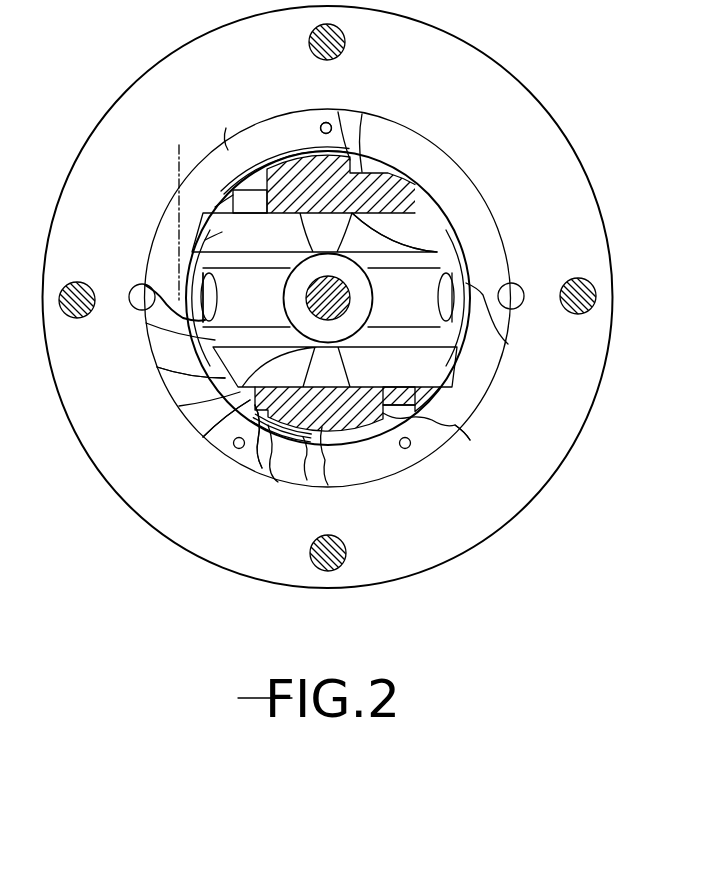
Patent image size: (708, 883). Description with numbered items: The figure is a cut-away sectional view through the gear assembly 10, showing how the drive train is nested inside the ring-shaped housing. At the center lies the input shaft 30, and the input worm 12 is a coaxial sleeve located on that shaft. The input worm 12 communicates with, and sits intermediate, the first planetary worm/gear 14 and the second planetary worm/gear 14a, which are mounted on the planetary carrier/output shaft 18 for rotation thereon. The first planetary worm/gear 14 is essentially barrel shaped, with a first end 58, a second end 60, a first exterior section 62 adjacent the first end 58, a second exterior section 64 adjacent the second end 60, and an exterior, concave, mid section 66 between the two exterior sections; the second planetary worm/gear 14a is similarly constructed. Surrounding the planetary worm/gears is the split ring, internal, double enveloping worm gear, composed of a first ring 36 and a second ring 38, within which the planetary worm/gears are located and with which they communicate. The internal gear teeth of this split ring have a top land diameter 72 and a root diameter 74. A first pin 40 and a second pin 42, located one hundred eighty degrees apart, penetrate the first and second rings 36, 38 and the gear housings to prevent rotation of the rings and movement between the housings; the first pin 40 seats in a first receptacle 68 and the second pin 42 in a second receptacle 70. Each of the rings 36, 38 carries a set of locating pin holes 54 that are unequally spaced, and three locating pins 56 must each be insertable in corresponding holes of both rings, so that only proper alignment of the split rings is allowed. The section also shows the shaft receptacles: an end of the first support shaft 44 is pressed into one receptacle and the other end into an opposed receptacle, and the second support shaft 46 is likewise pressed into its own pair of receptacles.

The gear assembly 10 is at (412, 122).
The input worm 12 is at (353, 332).
The first planetary worm/gear 14 is at (162, 377).
The second planetary worm/gear 14a is at (425, 262).
The planetary carrier/output shaft 18 is at (234, 186).
The input shaft 30 is at (342, 300).
The first ring 36 is at (228, 150).
The second ring 38 is at (224, 447).
The first pin 40 is at (514, 288).
The second pin 42 is at (133, 289).
The first support shaft 44 is at (237, 190).
The second support shaft 46 is at (408, 396).
The locating pin holes 54 is at (331, 124).
The locating pins 56 is at (323, 123).
The first end 58 is at (215, 207).
The second end 60 is at (228, 429).
The first exterior section 62 is at (205, 240).
The second exterior section 64 is at (212, 391).
The exterior concave mid section 66 is at (222, 293).
The first receptacle 68 is at (523, 294).
The second receptacle 70 is at (140, 307).
The top land diameter 72 is at (281, 176).
The root diameter 74 is at (245, 190).